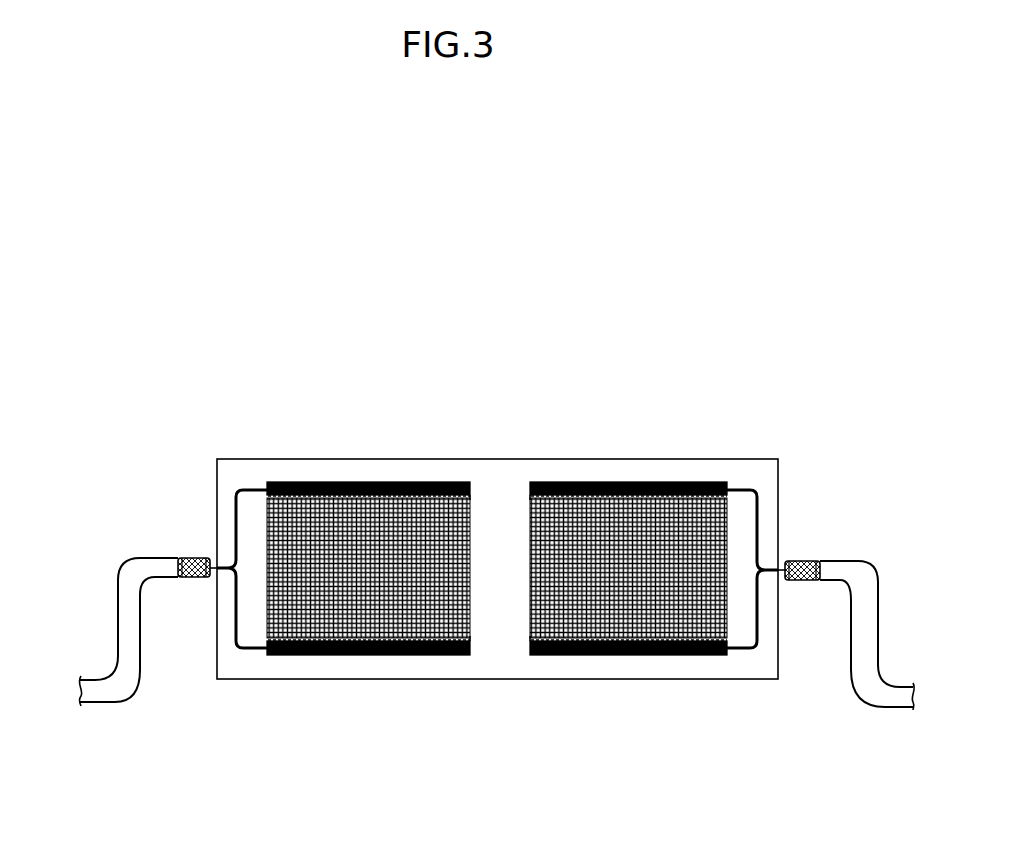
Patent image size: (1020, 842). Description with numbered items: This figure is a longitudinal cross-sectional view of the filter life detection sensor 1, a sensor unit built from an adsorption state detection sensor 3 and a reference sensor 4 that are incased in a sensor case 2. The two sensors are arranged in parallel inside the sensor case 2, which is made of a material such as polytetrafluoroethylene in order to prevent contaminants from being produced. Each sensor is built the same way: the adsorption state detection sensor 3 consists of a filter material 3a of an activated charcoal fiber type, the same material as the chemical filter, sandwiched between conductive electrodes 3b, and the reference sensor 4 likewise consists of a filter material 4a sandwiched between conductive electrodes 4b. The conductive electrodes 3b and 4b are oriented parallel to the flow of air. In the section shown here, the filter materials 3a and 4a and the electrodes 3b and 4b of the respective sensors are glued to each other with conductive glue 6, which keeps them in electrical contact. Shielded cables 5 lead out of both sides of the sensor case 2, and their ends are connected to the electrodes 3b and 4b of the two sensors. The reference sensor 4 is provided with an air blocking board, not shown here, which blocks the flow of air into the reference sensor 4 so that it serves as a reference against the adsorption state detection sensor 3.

The filter life detection sensor 1 is at (281, 350).
The sensor case 2 is at (717, 456).
The adsorption state detection sensor 3 is at (368, 569).
The filter material 3a is at (349, 483).
The conductive electrodes 3b is at (412, 483).
The reference sensor 4 is at (628, 569).
The filter material 4a is at (658, 483).
The conductive electrodes 4b is at (596, 483).
The shielded cables 5 is at (143, 568).
The conductive glue 6 is at (532, 497).